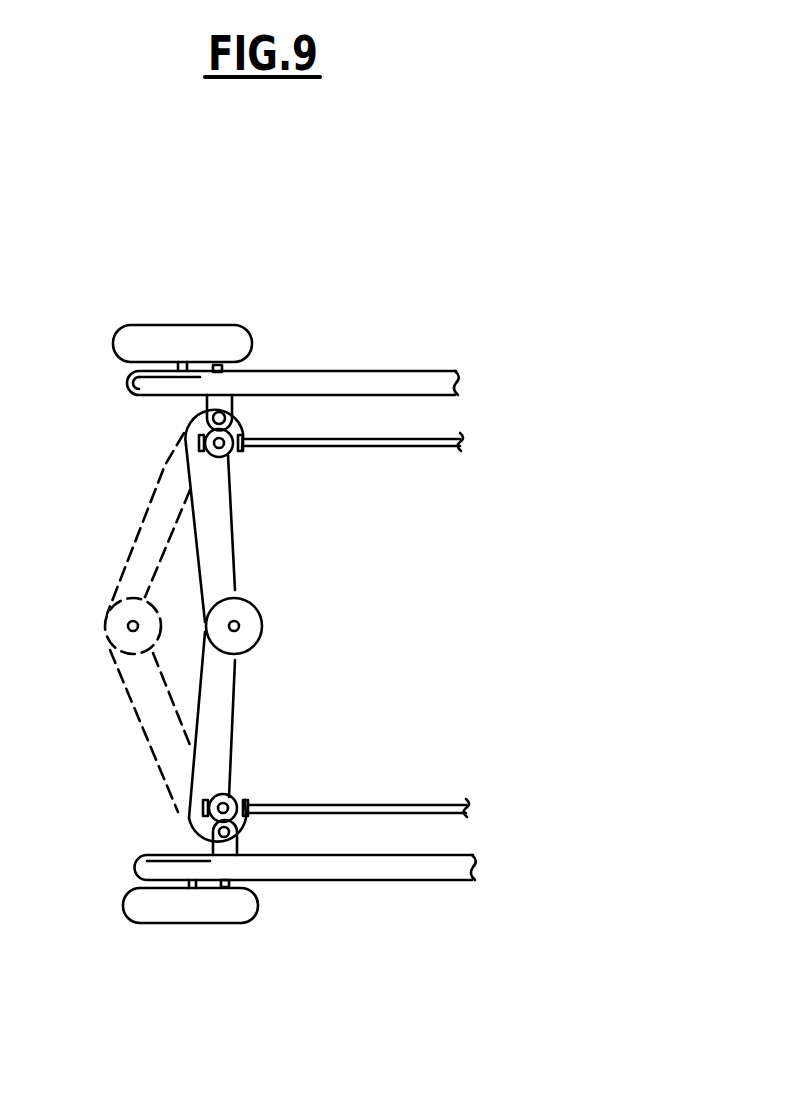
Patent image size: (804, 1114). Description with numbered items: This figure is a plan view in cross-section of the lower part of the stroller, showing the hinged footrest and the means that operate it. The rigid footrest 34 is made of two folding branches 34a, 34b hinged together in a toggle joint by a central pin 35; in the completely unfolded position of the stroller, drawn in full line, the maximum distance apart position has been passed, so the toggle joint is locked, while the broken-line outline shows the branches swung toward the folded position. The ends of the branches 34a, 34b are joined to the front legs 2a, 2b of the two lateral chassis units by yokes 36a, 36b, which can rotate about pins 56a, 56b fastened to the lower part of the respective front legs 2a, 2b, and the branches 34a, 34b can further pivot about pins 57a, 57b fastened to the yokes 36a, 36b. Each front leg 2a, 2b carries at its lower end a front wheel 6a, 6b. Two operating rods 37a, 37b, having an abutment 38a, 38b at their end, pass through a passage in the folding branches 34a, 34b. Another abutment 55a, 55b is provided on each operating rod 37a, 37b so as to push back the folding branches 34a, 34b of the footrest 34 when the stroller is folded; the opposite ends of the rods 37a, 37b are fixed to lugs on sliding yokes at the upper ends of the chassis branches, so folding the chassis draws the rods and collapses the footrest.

The front leg 2a is at (448, 866).
The front leg 2b is at (421, 381).
The front wheel 6a is at (203, 903).
The front wheel 6b is at (186, 340).
The rigid footrest 34 is at (257, 626).
The folding branch 34a is at (215, 717).
The folding branch 34b is at (210, 543).
The central pin 35 is at (240, 626).
The yoke 36a is at (225, 843).
The yoke 36b is at (222, 402).
The operating rod 37a is at (377, 810).
The operating rod 37b is at (345, 440).
The abutment 38a is at (200, 808).
The abutment 38b is at (185, 432).
The abutment 55a is at (244, 802).
The abutment 55b is at (243, 449).
The pin 56a is at (225, 887).
The pin 56b is at (218, 365).
The pin 57a is at (230, 832).
The pin 57b is at (225, 418).